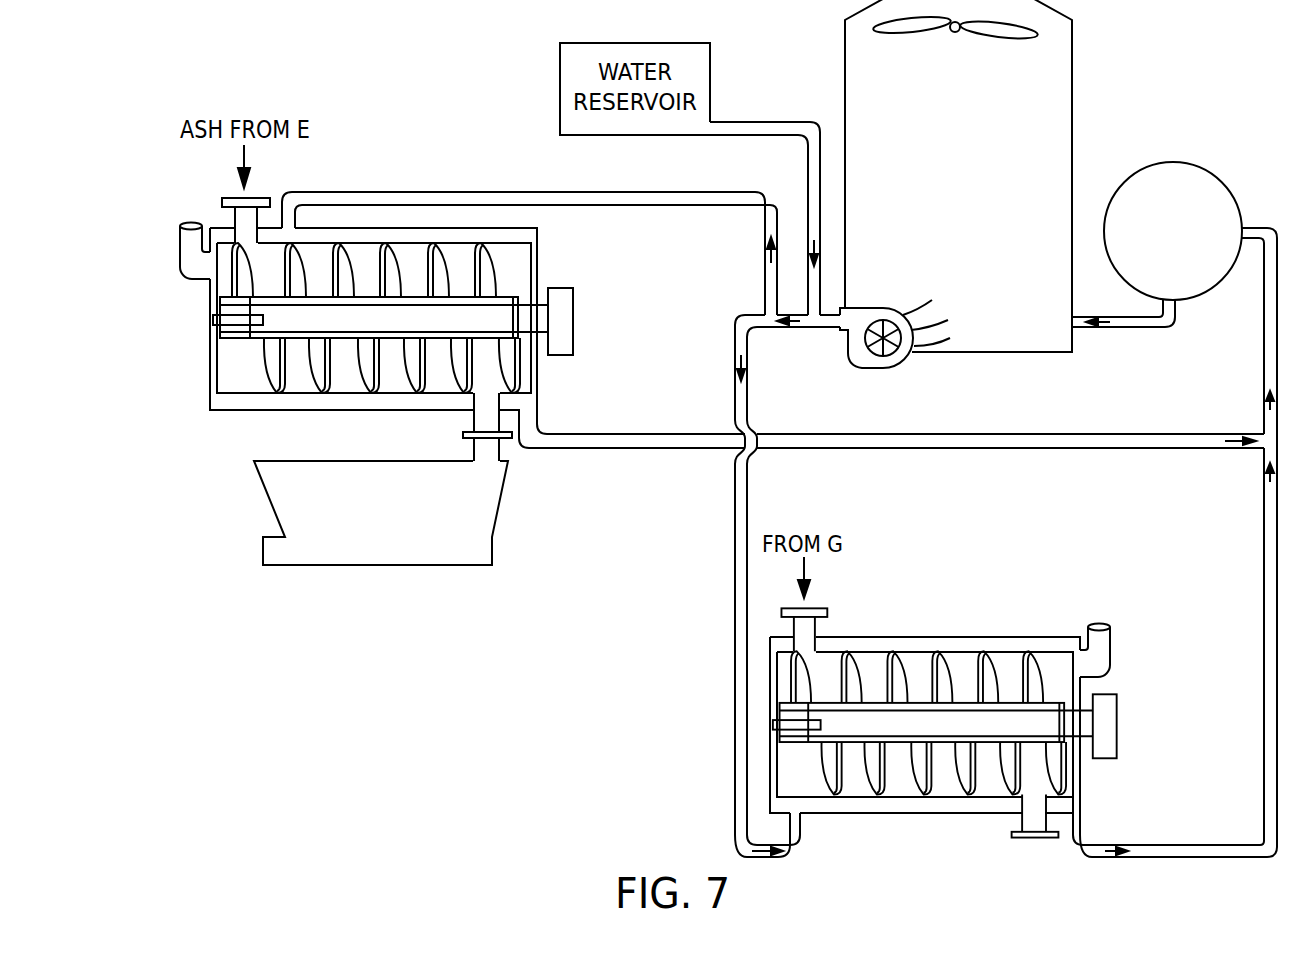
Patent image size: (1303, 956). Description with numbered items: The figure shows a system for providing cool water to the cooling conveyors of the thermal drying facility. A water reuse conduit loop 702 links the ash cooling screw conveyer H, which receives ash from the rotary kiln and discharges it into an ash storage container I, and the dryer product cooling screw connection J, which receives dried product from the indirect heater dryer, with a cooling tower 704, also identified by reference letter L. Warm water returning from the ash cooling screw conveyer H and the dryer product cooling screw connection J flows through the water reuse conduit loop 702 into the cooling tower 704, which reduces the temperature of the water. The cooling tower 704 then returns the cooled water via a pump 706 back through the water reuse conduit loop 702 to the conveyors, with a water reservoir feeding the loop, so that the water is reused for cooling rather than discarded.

The water reuse conduit loop 702 is at (778, 288).
The cooling tower 704 is at (1072, 62).
The pump 706 is at (897, 366).
The ash cooling screw conveyer H is at (185, 304).
The ash storage container I is at (248, 500).
The dryer product cooling screw connection J is at (980, 617).
The cooling tower L is at (831, 83).